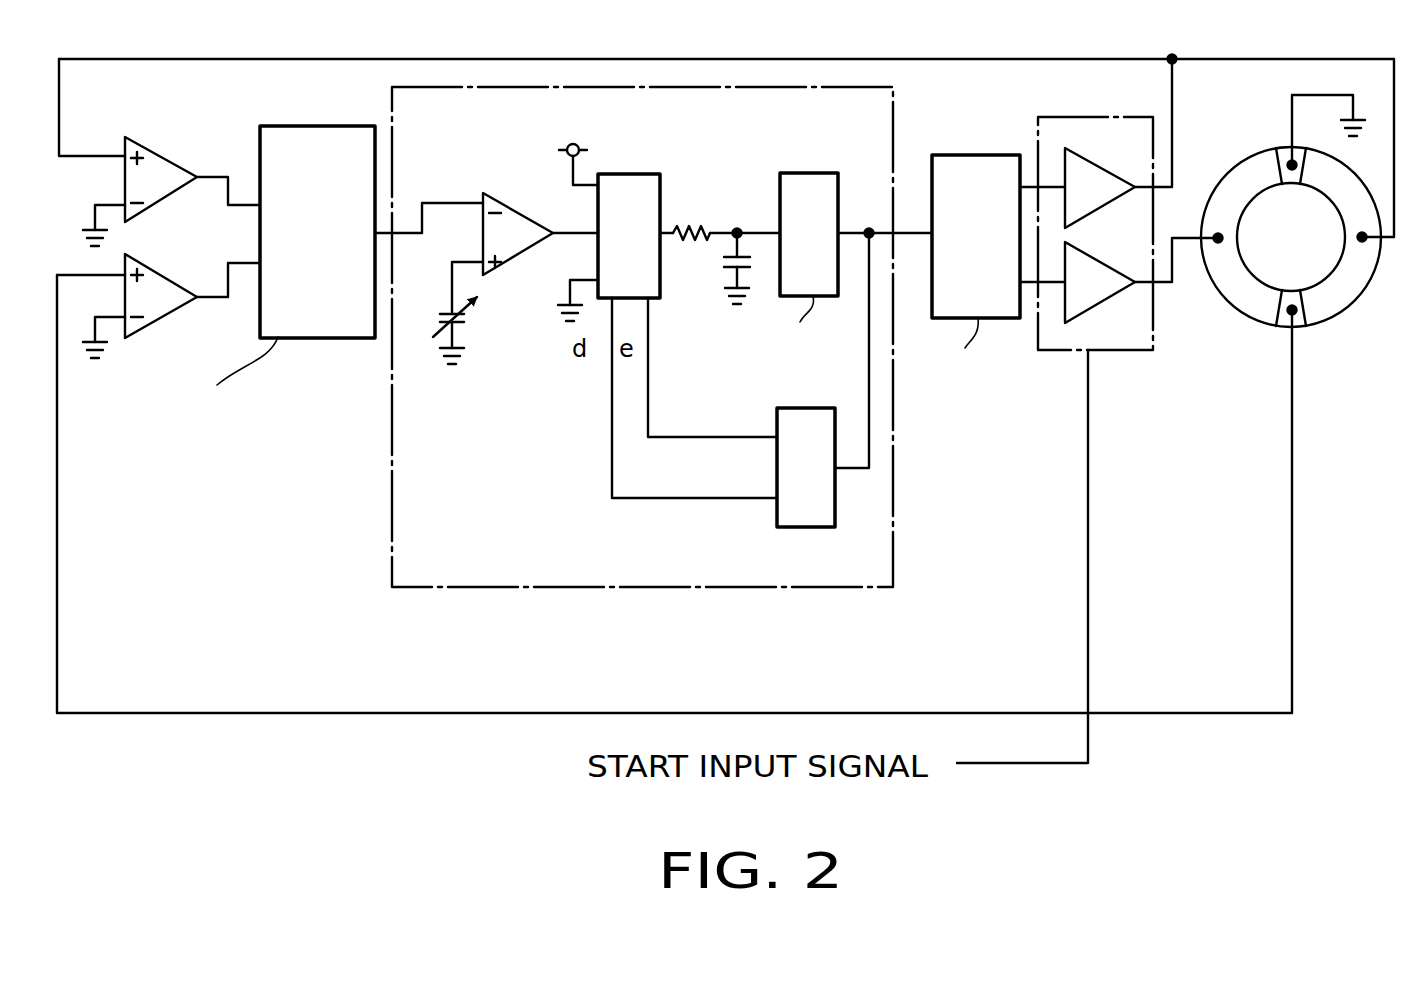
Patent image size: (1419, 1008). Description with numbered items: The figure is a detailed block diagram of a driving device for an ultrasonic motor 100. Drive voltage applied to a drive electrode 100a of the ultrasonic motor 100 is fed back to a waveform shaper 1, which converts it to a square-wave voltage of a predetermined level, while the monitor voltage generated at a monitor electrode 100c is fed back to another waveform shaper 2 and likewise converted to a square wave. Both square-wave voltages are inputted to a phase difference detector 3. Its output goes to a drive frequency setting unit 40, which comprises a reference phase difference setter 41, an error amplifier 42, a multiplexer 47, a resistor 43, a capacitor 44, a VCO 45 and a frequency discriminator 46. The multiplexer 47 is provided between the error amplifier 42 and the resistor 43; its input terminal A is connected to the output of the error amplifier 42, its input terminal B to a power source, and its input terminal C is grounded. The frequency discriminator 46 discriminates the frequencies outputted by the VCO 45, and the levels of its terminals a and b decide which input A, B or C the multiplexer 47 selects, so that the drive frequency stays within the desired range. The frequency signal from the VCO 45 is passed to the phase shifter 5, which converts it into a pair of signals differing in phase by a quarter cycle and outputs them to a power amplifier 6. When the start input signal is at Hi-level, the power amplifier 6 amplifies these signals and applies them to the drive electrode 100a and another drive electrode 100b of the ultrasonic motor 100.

The waveform shaper 1 is at (160, 157).
The waveform shaper 2 is at (165, 320).
The phase difference detector 3 is at (318, 126).
The phase shifter 5 is at (968, 155).
The power amplifier 6 is at (1118, 350).
The drive frequency setting unit 40 is at (388, 475).
The reference phase difference setter 41 is at (470, 320).
The error amplifier 42 is at (498, 195).
The resistor 43 is at (700, 225).
The capacitor 44 is at (722, 262).
The VCO 45 is at (805, 173).
The frequency discriminator 46 is at (775, 525).
The multiplexer 47 is at (628, 174).
The ultrasonic motor 100 is at (1298, 250).
The drive electrode 100a is at (1352, 272).
The drive electrode 100b is at (1250, 180).
The monitor electrode 100c is at (1283, 325).